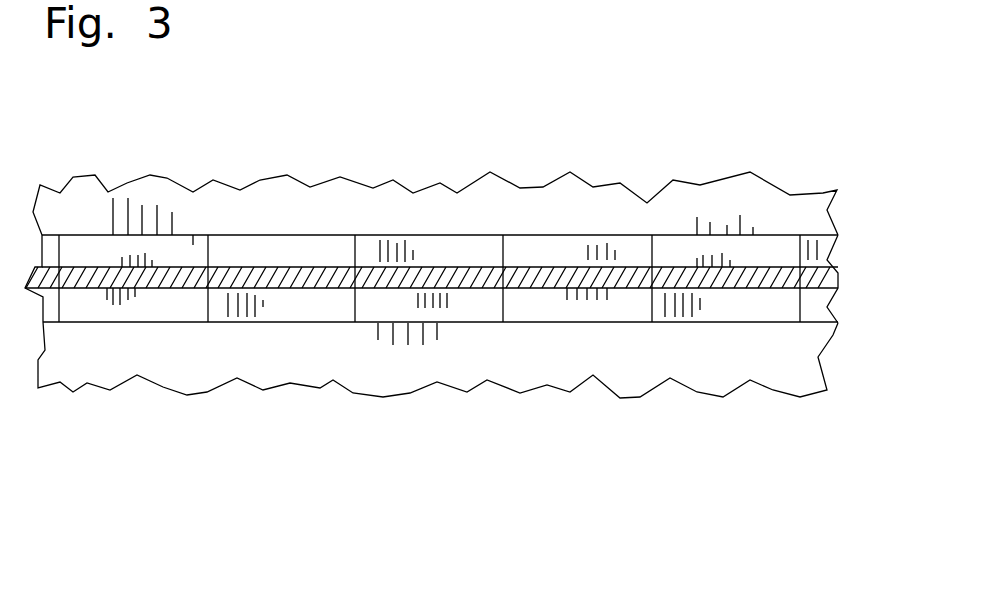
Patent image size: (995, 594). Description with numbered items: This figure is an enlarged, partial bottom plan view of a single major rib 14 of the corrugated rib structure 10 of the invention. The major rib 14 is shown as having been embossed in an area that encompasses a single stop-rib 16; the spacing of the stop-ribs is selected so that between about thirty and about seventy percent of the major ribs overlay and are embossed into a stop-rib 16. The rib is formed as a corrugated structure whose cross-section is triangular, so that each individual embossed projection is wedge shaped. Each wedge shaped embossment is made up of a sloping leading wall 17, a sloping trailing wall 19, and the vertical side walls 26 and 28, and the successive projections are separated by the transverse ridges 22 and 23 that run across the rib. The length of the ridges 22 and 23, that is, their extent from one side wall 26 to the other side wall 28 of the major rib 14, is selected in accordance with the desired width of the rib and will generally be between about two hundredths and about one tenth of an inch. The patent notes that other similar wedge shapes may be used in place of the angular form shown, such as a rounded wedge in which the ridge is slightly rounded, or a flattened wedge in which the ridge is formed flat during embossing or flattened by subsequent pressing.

The multilayer article 10 is at (186, 100).
The major rib 14 is at (850, 224).
The stop-rib 16 is at (270, 273).
The sloping leading wall 17 is at (257, 245).
The sloping trailing wall 19 is at (193, 240).
The ridge 22 is at (357, 240).
The ridge 23 is at (60, 250).
The side wall 26 is at (543, 243).
The side wall 28 is at (305, 322).